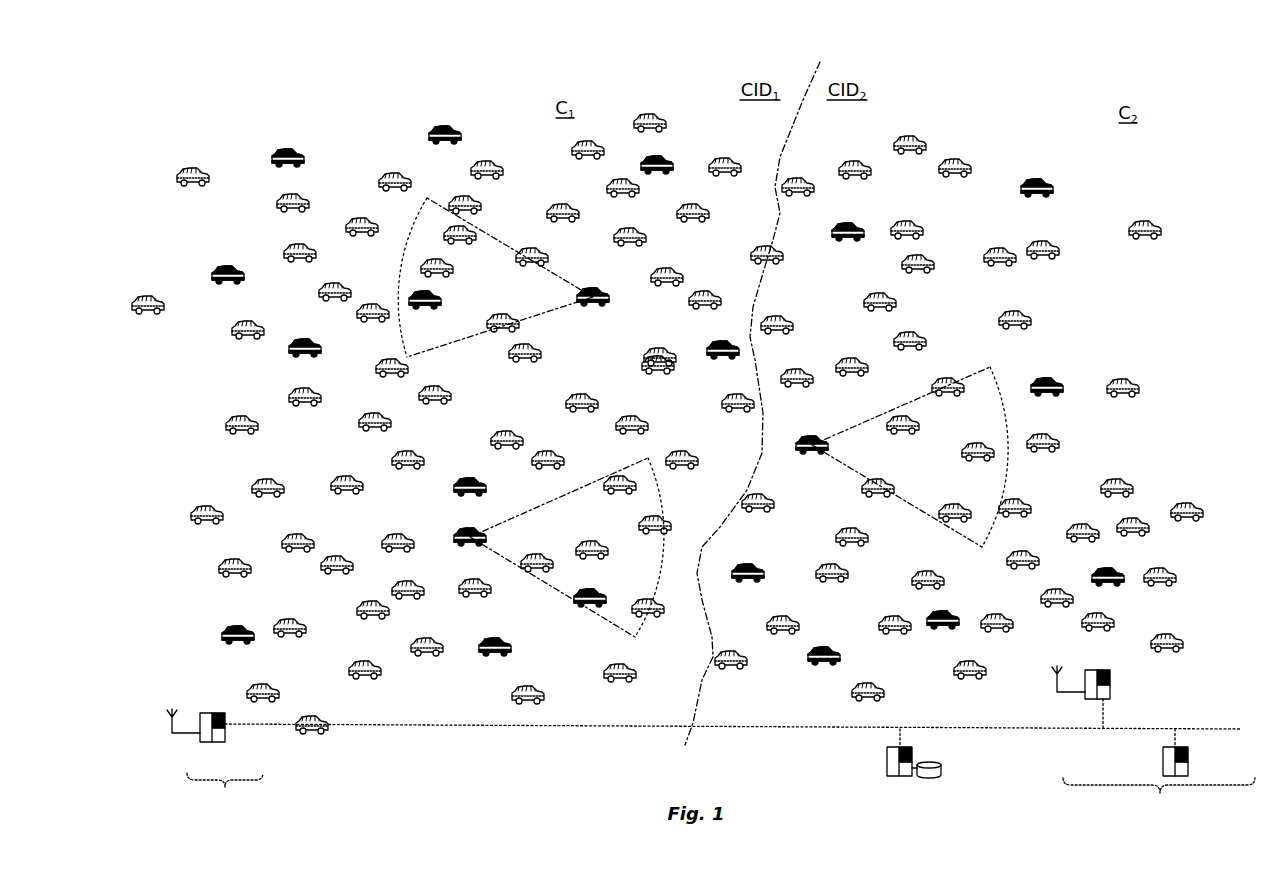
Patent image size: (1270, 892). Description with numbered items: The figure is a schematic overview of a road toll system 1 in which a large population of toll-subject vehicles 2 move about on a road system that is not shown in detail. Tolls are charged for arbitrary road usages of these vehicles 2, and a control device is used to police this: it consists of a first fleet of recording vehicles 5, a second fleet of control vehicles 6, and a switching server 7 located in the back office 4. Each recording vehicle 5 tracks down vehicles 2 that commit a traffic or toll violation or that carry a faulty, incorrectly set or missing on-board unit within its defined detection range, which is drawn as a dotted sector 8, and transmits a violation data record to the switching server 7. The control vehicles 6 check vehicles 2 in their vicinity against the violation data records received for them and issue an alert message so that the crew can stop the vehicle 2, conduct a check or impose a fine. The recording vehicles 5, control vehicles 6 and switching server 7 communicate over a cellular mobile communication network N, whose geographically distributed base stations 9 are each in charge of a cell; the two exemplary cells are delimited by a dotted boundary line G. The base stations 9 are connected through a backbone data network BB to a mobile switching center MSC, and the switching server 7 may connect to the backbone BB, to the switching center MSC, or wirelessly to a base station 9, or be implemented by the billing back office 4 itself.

The road toll system 1 is at (171, 96).
The vehicles 2 is at (912, 156).
The back office 4 is at (900, 775).
The recording vehicles 5 is at (598, 303).
The control vehicles 6 is at (287, 150).
The switching server 7 is at (887, 772).
The broadcast sector / reception area 8 is at (400, 260).
The base stations 9 is at (217, 743).
The dotted boundary line G is at (777, 220).
The data network (backbone) BB is at (1072, 732).
The switching center MSC is at (1188, 768).
The cellular mobile communication network N is at (721, 797).